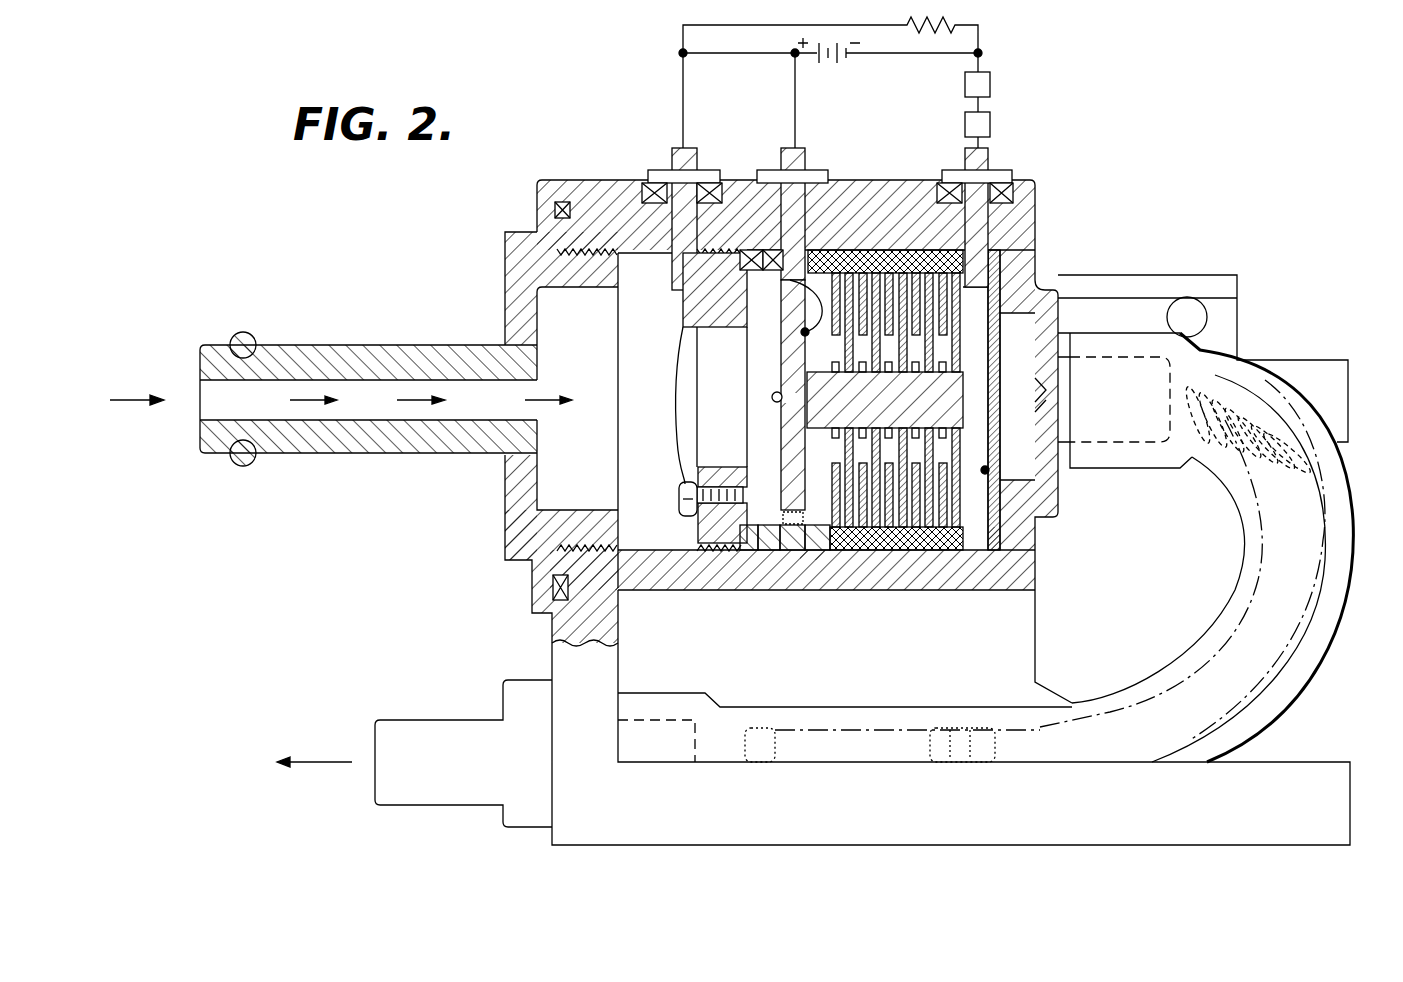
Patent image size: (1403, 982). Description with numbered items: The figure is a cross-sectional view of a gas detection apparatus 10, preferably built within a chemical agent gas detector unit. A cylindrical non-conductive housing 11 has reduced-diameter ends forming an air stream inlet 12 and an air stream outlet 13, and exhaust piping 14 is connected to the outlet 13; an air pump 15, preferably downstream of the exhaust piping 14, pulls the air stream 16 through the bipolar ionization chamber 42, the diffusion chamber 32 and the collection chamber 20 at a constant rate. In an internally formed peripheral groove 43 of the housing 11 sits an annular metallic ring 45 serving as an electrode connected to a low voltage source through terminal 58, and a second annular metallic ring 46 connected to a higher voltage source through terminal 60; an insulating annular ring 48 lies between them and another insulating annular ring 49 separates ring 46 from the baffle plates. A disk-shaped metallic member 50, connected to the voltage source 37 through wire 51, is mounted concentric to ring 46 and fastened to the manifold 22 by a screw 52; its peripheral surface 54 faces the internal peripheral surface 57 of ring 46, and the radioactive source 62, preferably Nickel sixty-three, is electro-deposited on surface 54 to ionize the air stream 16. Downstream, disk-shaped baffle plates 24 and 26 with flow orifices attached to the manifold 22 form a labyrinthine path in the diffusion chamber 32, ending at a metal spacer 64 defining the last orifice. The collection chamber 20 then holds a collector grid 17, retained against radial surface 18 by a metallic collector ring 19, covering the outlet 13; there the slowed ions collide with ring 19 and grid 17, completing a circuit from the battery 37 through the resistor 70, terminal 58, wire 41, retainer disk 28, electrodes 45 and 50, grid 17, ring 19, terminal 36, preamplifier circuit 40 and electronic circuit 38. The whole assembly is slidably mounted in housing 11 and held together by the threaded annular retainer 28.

The gas detection apparatus 10 is at (742, 874).
The housing 11 is at (648, 592).
The air stream inlet 12 is at (343, 345).
The air stream outlet 13 is at (1045, 405).
The exhaust piping 14 is at (1340, 583).
The air pump 15 is at (1153, 378).
The air stream 16 is at (122, 401).
The collector grid 17 is at (994, 350).
The radial surface 18 is at (989, 470).
The collector ring 19 is at (983, 560).
The collection chamber 20 is at (977, 373).
The manifold 22 is at (953, 418).
The baffle plates 24 is at (832, 252).
The baffle plates 26 is at (873, 262).
The annular retainer 28 is at (733, 245).
The diffusion chamber 32 is at (930, 308).
The terminal 36 is at (993, 181).
The battery 37 is at (828, 60).
The electronic circuit 38 is at (965, 86).
The preamplifier circuit 40 is at (965, 125).
The wire 41 is at (676, 362).
The bipolar ionization chamber 42 is at (752, 365).
The peripheral groove 43 is at (818, 553).
The annular metallic ring 45 is at (744, 552).
The annular metallic ring 46 is at (786, 552).
The annular ring 48 is at (768, 552).
The annular ring 49 is at (814, 548).
The disk-shaped metallic member 50 is at (773, 462).
The wire 51 is at (781, 320).
The screw 52 is at (772, 397).
The peripheral surface 54 is at (752, 316).
The internal peripheral surface 57 is at (810, 512).
The terminal 58 is at (673, 152).
The terminal 60 is at (790, 150).
The radioactive source 62 is at (745, 298).
The metal spacer 64 is at (933, 252).
The resistor 70 is at (955, 28).